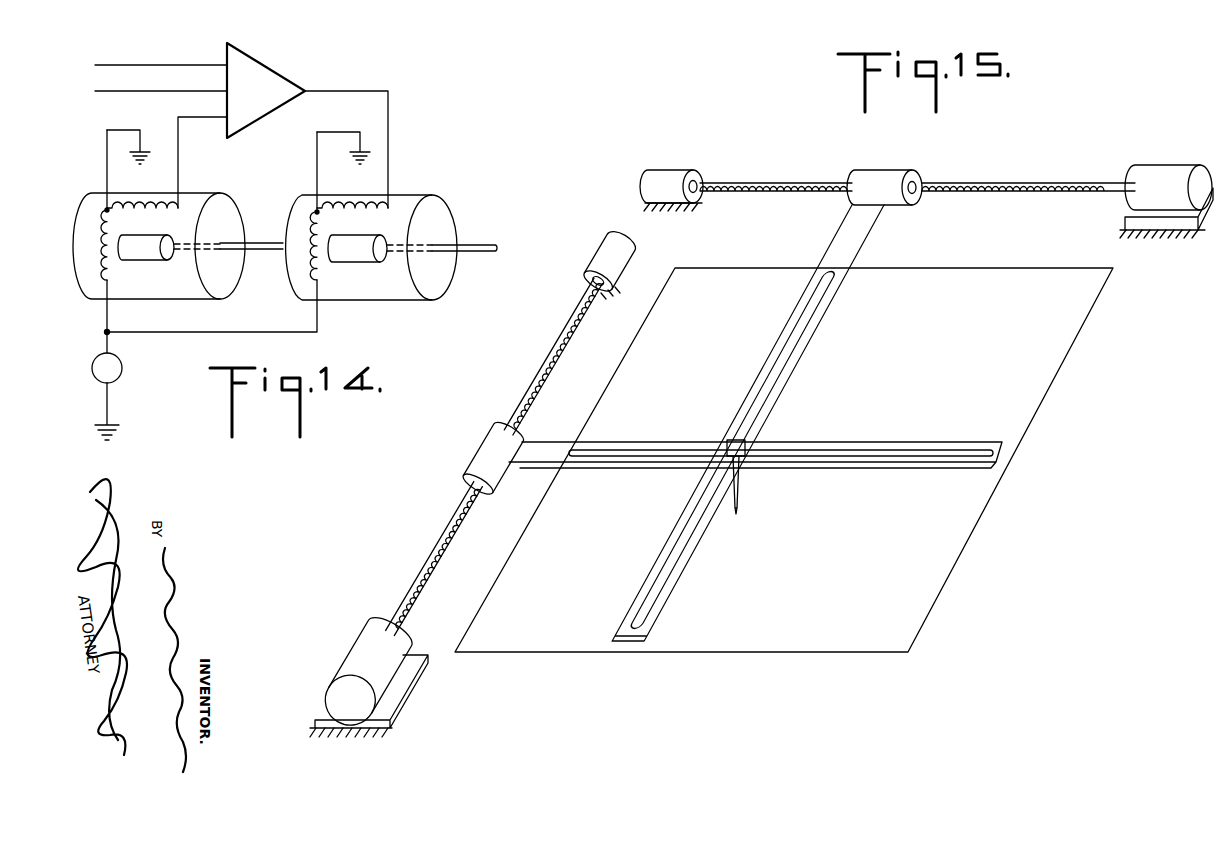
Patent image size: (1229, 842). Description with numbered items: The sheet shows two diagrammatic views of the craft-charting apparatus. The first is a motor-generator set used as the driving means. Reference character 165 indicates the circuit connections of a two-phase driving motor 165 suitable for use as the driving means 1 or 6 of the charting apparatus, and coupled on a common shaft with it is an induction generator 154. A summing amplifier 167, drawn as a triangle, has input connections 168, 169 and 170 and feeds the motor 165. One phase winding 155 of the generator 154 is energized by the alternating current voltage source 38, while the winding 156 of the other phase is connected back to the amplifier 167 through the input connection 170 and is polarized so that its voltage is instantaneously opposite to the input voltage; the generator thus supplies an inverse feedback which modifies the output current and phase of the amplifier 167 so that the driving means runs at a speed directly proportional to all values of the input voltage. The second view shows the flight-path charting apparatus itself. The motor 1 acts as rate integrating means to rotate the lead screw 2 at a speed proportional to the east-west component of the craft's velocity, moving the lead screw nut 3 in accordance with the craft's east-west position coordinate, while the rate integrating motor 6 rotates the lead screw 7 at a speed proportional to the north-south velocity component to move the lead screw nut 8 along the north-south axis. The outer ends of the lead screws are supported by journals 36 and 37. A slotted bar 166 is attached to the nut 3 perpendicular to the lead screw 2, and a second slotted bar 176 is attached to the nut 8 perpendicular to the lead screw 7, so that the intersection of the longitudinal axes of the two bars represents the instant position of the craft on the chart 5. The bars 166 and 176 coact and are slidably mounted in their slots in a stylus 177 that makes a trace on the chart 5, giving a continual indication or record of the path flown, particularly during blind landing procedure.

In FIG. 15, the motor 1 is at (1165, 170).
In FIG. 15, the lead screw 2 is at (985, 182).
In FIG. 15, the lead screw nut 3 is at (880, 173).
In FIG. 15, the chart 5 is at (947, 552).
In FIG. 15, the rate integrating motor 6 is at (356, 656).
In FIG. 15, the lead screw 7 is at (430, 546).
In FIG. 15, the lead screw nut 8 is at (488, 440).
In FIG. 15, the journal 36 is at (662, 168).
In FIG. 15, the journal 37 is at (600, 252).
In FIG. 14, the alternating current voltage source 38 is at (122, 368).
In FIG. 14, the induction generator 154 is at (169, 288).
In FIG. 14, the phase winding 155 is at (100, 230).
In FIG. 14, the winding 156 is at (160, 190).
In FIG. 14, the driving motor 165 is at (435, 208).
In FIG. 15, the slotted bar 166 is at (860, 244).
In FIG. 14, the summing amplifier 167 is at (270, 63).
In FIG. 14, the input connection 168 is at (158, 65).
In FIG. 14, the input connection 169 is at (116, 91).
In FIG. 14, the input connection 170 is at (178, 117).
In FIG. 15, the slotted bar 176 is at (940, 442).
In FIG. 15, the stylus 177 is at (760, 446).